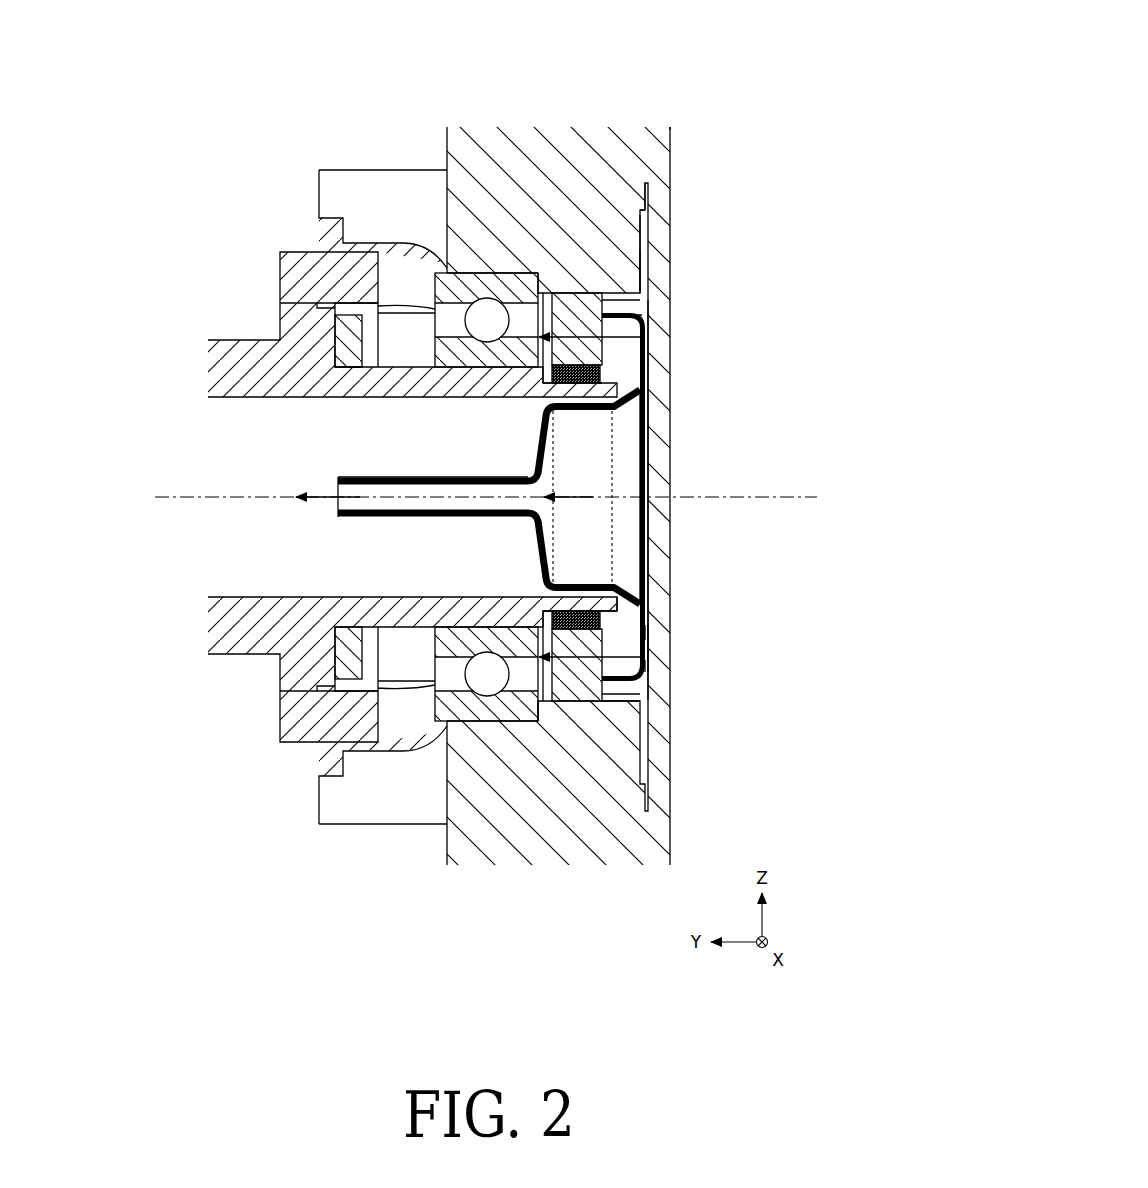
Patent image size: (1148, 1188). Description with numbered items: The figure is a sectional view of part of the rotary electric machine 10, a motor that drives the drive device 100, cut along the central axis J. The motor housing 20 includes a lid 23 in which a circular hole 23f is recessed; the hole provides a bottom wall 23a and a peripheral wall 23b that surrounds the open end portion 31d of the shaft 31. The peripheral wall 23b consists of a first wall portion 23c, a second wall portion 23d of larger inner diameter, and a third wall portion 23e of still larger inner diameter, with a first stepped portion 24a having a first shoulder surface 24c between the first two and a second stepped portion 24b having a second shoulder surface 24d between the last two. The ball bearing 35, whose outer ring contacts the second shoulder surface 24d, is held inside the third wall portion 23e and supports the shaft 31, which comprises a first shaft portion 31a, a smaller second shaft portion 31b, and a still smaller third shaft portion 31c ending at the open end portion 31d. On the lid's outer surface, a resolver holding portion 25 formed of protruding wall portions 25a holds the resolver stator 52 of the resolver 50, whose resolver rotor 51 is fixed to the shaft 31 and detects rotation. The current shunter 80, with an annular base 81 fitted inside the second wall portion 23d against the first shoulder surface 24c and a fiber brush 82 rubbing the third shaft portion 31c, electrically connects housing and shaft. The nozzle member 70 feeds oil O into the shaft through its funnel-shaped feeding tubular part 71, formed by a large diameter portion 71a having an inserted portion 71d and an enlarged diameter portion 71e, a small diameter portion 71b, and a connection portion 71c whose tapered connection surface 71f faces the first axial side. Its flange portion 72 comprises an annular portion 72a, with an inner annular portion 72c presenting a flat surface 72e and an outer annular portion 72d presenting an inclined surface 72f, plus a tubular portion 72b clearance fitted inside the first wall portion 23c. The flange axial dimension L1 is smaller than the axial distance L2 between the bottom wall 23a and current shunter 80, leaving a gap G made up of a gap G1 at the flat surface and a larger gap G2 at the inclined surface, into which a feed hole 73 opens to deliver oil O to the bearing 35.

The drive device 100 is at (723, 73).
The rotary electric machine 10 is at (680, 136).
The motor housing 20 is at (552, 122).
The lid 23 is at (655, 760).
The bottom wall 23a is at (650, 405).
The peripheral wall 23b is at (755, 160).
The first wall portion 23c is at (612, 300).
The second wall portion 23d is at (640, 262).
The third wall portion 23e is at (605, 232).
The hole 23f is at (485, 272).
The first stepped portion 24a is at (630, 770).
The second stepped portion 24b is at (513, 722).
The first shoulder surface 24c is at (602, 700).
The second shoulder surface 24d is at (525, 700).
The resolver holding portion 25 is at (330, 830).
The protruding wall portions 25a is at (335, 190).
The shaft 31 is at (218, 333).
The first shaft portion 31a is at (250, 348).
The second shaft portion 31b is at (300, 693).
The third shaft portion 31c is at (620, 610).
The open end portion 31d is at (620, 598).
The bearing 35 is at (436, 295).
The resolver 50 is at (218, 912).
The resolver rotor 51 is at (320, 775).
The resolver stator 52 is at (300, 735).
The nozzle member 70 is at (338, 520).
The feeding tubular part 71 is at (428, 520).
The large diameter portion 71a is at (750, 427).
The small diameter portion 71b is at (430, 477).
The connection portion 71c is at (534, 433).
The inserted portion 71d is at (625, 440).
The enlarged diameter portion 71e is at (633, 397).
The connection surface 71f is at (645, 505).
The flange portion 72 is at (649, 369).
The annular portion 72a is at (783, 288).
The tubular portion 72b is at (622, 679).
The inner annular portion 72c is at (640, 348).
The outer annular portion 72d is at (620, 321).
The flat surface 72e is at (648, 378).
The inclined surface 72f is at (645, 660).
The feed hole 73 is at (638, 332).
The current shunter 80 is at (590, 680).
The base 81 is at (465, 372).
The brush 82 is at (552, 395).
The gap G is at (808, 622).
The gap G1 is at (650, 632).
The gap G2 is at (650, 666).
The central axis J is at (793, 499).
The axial dimension L1 is at (640, 242).
The axial distance L2 is at (645, 197).
The oil O is at (325, 492).